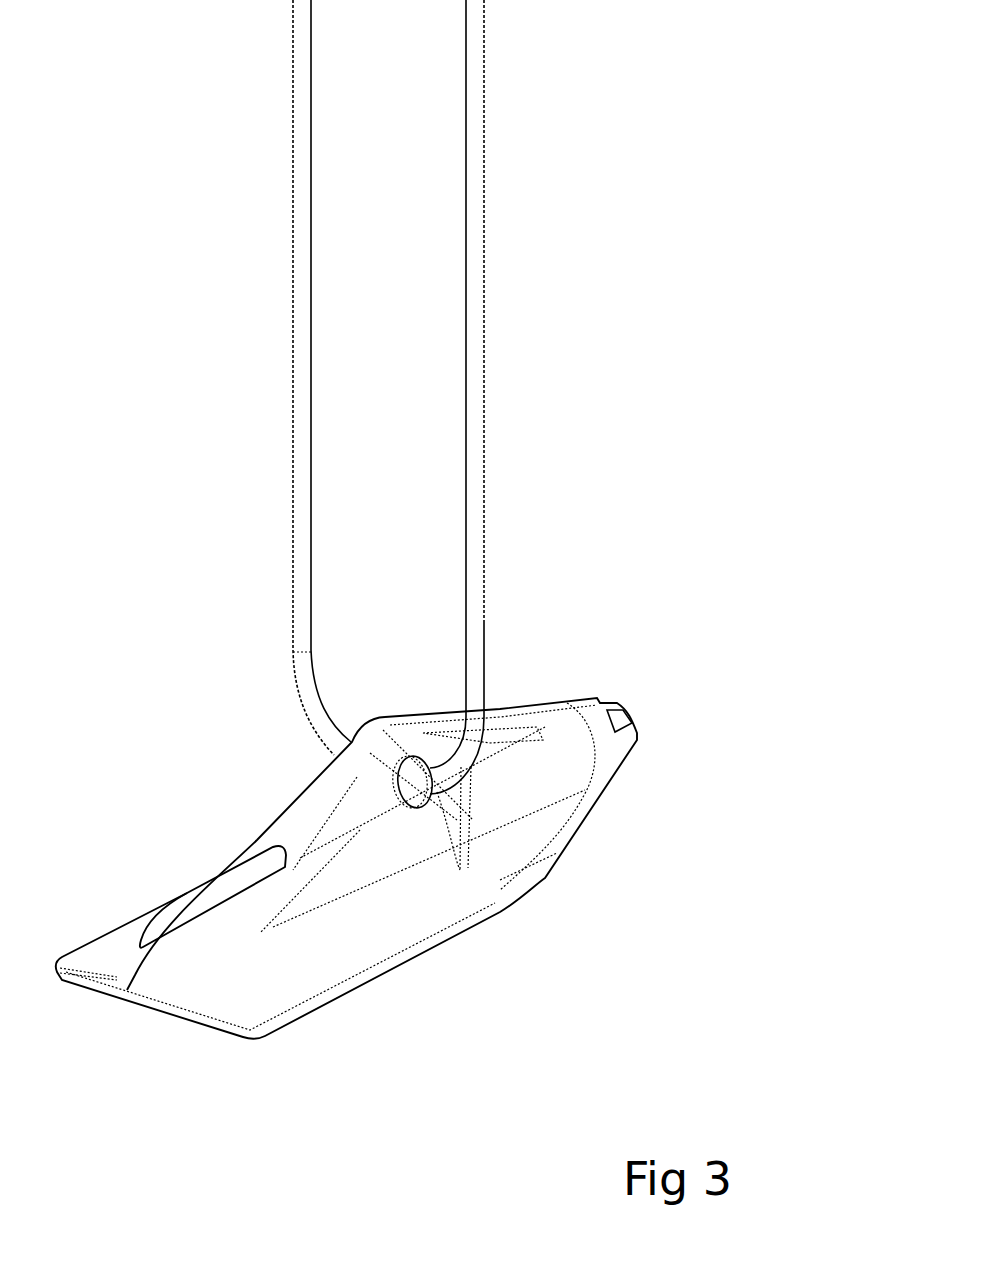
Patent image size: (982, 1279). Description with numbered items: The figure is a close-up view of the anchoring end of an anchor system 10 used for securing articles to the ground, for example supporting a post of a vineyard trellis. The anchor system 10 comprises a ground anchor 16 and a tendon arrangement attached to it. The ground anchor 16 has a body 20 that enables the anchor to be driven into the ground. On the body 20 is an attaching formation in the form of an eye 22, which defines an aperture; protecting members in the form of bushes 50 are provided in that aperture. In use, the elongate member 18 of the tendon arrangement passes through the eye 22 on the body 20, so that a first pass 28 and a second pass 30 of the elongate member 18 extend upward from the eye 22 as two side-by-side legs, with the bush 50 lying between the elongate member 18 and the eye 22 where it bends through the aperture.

The anchor system 10 is at (228, 350).
The ground anchor 16 is at (403, 976).
The elongate member 18 is at (490, 359).
The body 20 is at (427, 897).
The eye 22 is at (357, 837).
The first pass 28 is at (290, 52).
The second pass 30 is at (485, 13).
The bush 50 is at (402, 748).